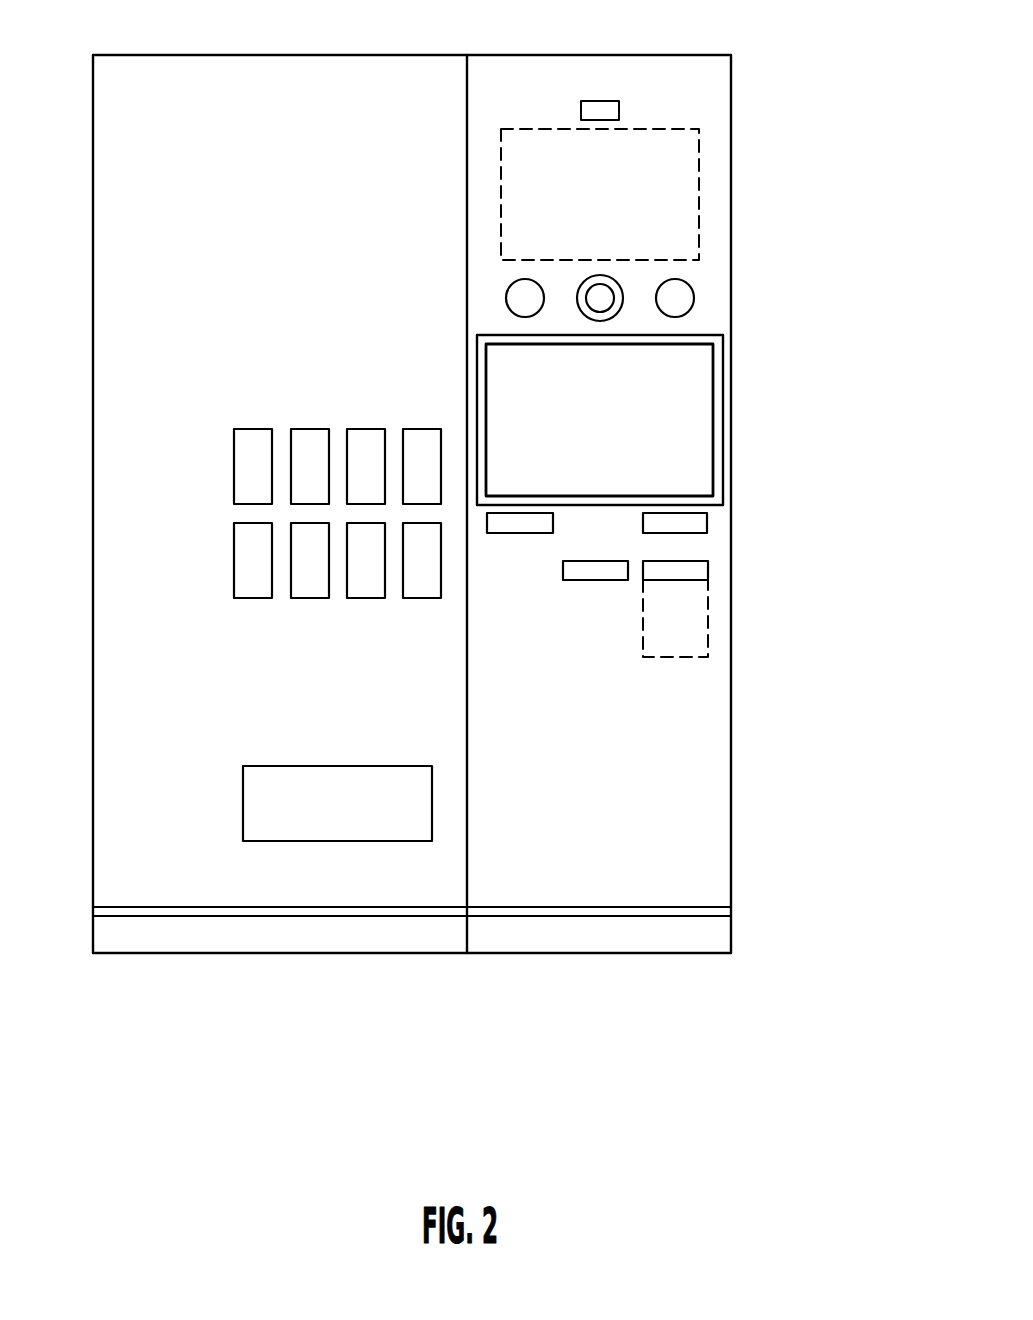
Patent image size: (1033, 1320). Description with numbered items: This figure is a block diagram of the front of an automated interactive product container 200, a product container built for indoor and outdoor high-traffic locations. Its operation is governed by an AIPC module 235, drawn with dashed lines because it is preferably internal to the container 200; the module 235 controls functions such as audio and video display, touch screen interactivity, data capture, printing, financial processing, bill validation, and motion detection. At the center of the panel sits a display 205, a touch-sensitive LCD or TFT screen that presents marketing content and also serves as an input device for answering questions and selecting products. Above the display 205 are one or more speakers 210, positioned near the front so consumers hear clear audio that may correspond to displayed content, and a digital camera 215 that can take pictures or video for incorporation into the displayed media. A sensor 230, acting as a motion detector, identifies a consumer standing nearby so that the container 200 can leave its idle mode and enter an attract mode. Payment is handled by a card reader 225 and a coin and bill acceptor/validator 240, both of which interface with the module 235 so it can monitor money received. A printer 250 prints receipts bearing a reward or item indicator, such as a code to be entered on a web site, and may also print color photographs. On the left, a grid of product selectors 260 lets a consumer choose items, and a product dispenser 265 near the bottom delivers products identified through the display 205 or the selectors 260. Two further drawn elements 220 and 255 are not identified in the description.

The automated interactive product container 200 is at (770, 777).
The display 205 is at (600, 420).
The speakers 210 is at (525, 298).
The digital camera 215 is at (600, 298).
The card slot 220 is at (520, 523).
The card reader 225 is at (677, 523).
The sensor 230 is at (600, 111).
The AIPC module 235 is at (600, 195).
The coin and bill acceptor/validator 240 is at (593, 570).
The printer 250 is at (675, 570).
The hidden compartment 255 is at (683, 620).
The product selectors 260 is at (234, 617).
The product dispenser 265 is at (337, 803).